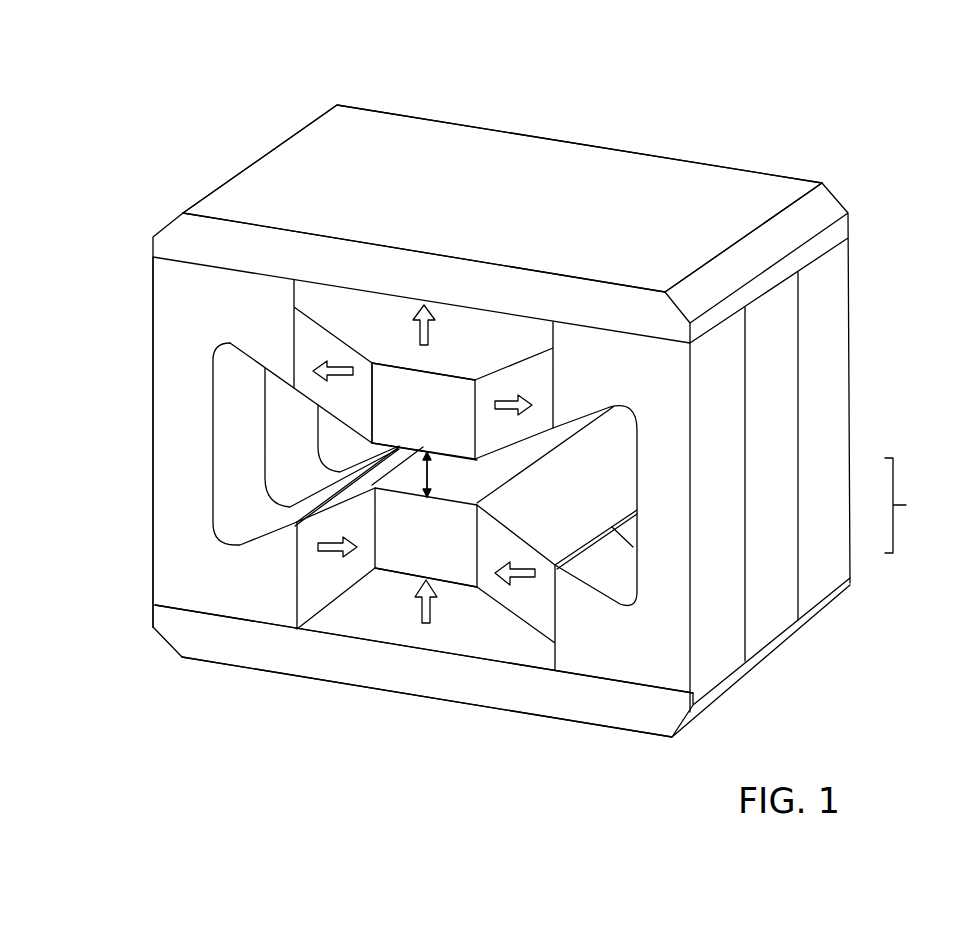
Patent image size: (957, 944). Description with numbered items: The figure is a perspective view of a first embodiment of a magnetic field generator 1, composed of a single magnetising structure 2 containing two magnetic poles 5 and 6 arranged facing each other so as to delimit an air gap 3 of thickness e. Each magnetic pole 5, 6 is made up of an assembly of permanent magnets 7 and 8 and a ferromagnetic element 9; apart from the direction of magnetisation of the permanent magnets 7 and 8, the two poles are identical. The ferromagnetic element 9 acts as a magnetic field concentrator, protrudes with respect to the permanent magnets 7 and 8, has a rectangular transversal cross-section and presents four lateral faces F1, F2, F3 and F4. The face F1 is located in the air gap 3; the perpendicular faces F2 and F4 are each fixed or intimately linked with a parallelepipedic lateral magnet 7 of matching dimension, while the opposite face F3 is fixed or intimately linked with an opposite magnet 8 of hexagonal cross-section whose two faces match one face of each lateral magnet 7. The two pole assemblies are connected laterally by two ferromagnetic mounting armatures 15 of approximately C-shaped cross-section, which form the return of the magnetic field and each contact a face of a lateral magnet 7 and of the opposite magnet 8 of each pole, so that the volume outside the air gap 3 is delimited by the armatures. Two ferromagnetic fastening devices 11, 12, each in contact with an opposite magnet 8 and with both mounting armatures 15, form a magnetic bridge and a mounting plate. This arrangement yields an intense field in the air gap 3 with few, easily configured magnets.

The magnetic field generator 1 is at (871, 178).
The fastening device 11 is at (350, 137).
The mounting armature 15 is at (792, 360).
The ferromagnetic element 9 is at (452, 402).
The lateral magnet 7 is at (307, 350).
The first magnetic pole 5 is at (577, 357).
The second magnetic pole 6 is at (585, 635).
The magnetising structure 2 is at (907, 505).
The fastening device 12 is at (330, 667).
The opposite magnet 8 is at (410, 310).
The air gap 3 is at (444, 474).
The air gap thickness e is at (420, 474).
The lateral face located in the air gap F1 is at (447, 460).
The perpendicular face F2 is at (365, 368).
The opposite face F3 is at (387, 363).
The perpendicular face F4 is at (480, 410).